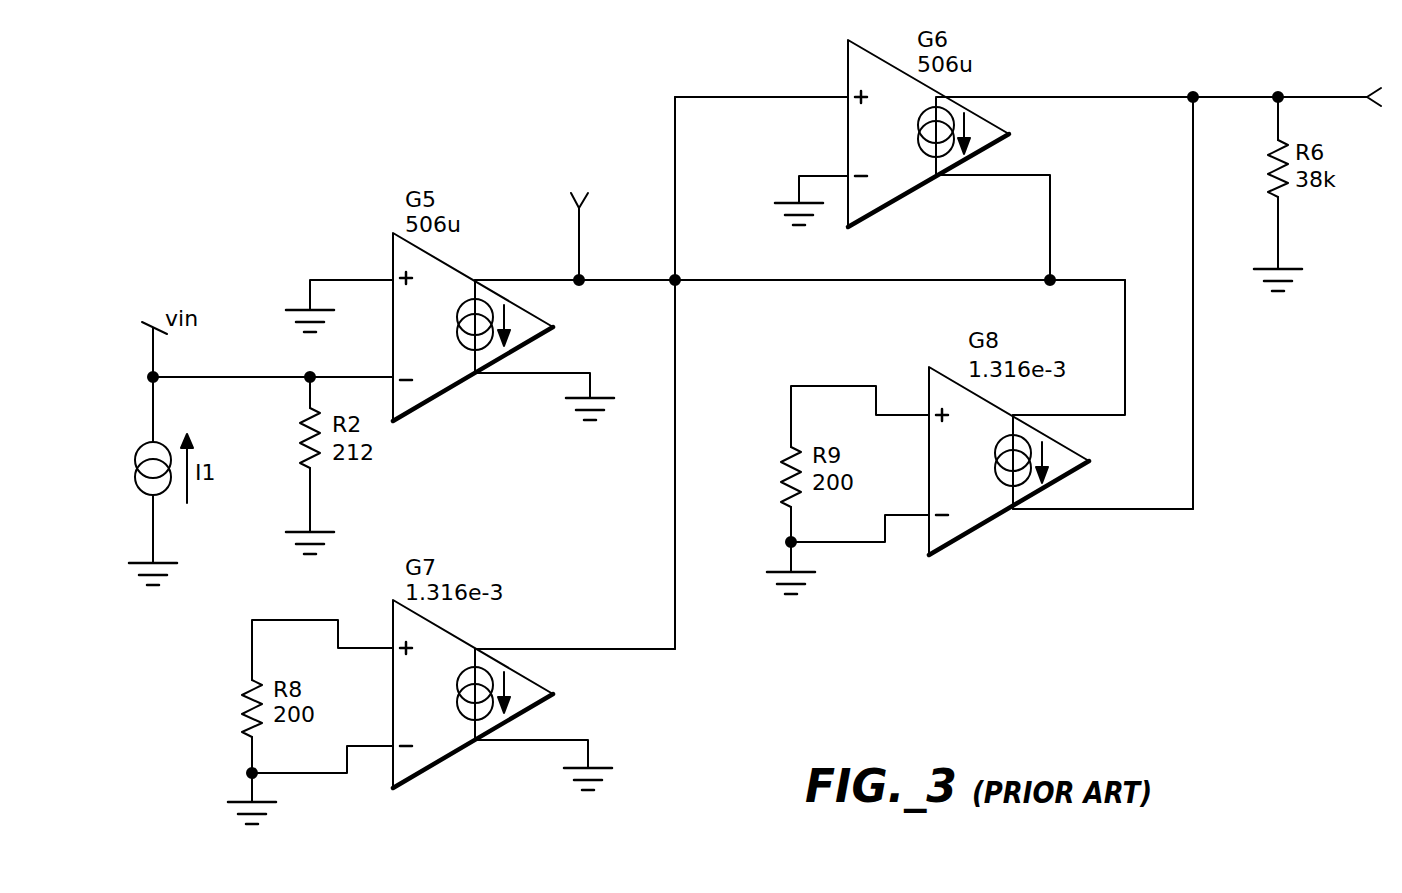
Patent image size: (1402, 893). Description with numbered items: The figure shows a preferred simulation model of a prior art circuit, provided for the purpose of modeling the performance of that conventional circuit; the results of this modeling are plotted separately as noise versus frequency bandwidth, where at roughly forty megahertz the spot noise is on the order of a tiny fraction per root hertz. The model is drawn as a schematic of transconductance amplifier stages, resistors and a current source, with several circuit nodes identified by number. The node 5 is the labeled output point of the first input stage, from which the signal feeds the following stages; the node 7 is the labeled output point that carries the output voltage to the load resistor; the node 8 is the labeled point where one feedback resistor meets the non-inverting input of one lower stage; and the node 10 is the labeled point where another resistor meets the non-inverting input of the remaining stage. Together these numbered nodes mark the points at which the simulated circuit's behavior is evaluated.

The node 5 (output of G5 / Y4 terminal) 5 is at (800, 251).
The node 7 (output Vout1) 7 is at (1158, 99).
The node 8 (R8 / G7 non-inverting input) 8 is at (322, 650).
The node 10 (R9 / G8 non-inverting input) 10 is at (860, 416).